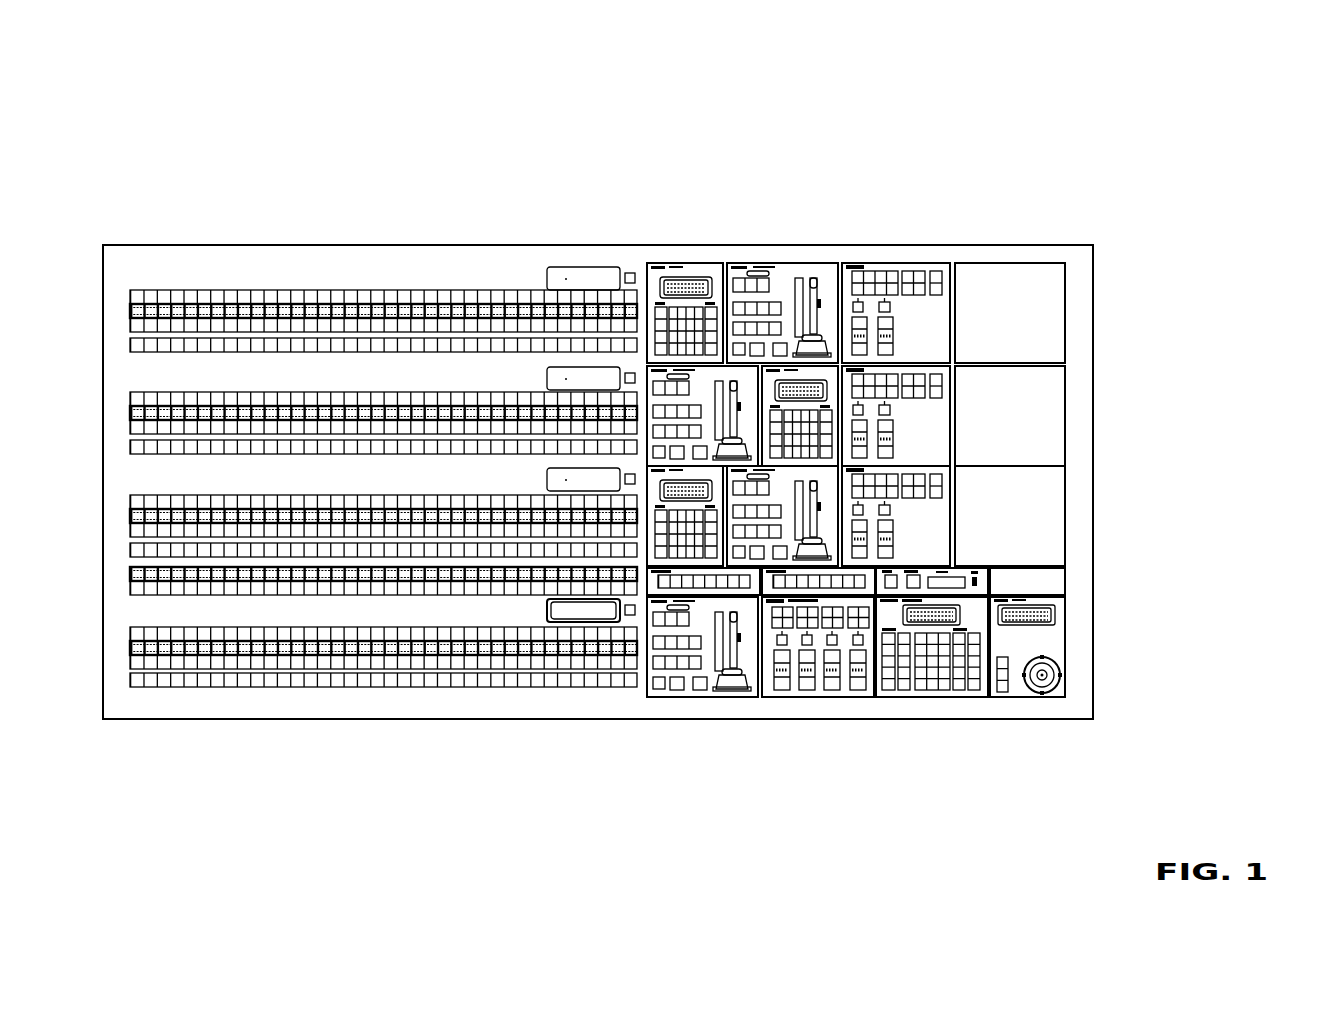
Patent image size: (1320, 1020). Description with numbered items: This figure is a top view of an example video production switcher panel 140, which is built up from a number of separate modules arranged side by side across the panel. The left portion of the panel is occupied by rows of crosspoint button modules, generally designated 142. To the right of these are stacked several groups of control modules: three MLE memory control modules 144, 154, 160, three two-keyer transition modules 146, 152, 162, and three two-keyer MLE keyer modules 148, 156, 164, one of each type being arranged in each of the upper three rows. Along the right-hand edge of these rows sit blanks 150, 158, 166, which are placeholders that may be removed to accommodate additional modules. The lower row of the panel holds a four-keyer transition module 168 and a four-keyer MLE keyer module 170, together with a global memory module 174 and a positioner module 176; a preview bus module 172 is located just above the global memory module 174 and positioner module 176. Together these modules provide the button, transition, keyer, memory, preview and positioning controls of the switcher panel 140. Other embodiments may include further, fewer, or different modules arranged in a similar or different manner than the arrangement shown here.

The switcher panel 140 is at (264, 170).
The crosspoint button modules 142 is at (160, 697).
The MLE memory control module 144 is at (707, 266).
The two-keyer transition module 146 is at (793, 264).
The two-keyer MLE keyer module 148 is at (908, 264).
The blank 150 is at (1047, 264).
The two-keyer transition module 152 is at (717, 407).
The MLE memory control module 154 is at (792, 380).
The two-keyer MLE keyer module 156 is at (885, 402).
The blank 158 is at (1067, 402).
The MLE memory control module 160 is at (657, 540).
The two-keyer transition module 162 is at (797, 540).
The two-keyer MLE keyer module 164 is at (892, 528).
The blank 166 is at (1067, 517).
The four-keyer transition module 168 is at (712, 698).
The four-keyer MLE keyer module 170 is at (830, 698).
The preview bus module 172 is at (985, 588).
The global memory module 174 is at (957, 698).
The positioner module 176 is at (1060, 698).